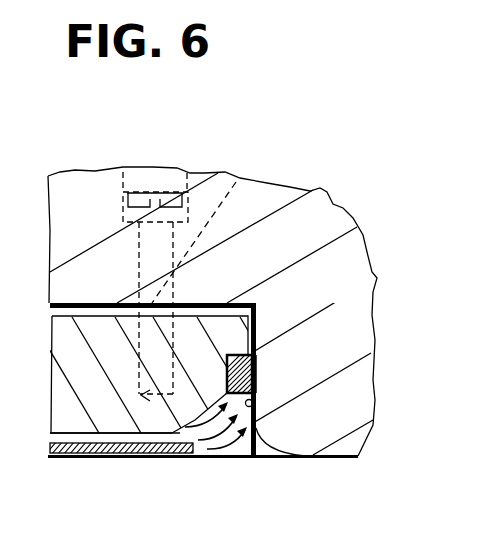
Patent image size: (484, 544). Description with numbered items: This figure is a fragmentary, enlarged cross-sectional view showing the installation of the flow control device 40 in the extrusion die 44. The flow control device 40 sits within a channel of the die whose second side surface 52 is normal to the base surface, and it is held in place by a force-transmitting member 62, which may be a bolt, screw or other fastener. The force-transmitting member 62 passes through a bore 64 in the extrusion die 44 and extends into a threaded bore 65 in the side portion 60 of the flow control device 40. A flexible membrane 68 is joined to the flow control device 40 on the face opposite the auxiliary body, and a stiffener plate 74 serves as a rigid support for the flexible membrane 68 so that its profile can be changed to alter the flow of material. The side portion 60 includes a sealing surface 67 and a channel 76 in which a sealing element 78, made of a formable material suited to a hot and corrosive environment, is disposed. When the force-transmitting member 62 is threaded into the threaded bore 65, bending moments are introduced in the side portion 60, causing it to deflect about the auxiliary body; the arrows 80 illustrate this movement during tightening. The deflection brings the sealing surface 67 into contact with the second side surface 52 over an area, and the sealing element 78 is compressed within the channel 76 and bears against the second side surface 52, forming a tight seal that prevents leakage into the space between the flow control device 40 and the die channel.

The flow control device 40 is at (122, 388).
The extrusion die 44 is at (95, 236).
The second side surface 52 is at (253, 313).
The side portion 60 is at (190, 372).
The force-transmitting member 62 is at (135, 192).
The bore 64 is at (169, 169).
The threaded bore 65 is at (237, 182).
The sealing surface 67 is at (290, 456).
The flexible membrane 68 is at (118, 458).
The stiffener plate 74 is at (70, 447).
The channel 76 is at (253, 352).
The sealing element 78 is at (256, 373).
The arrows 80 is at (203, 440).